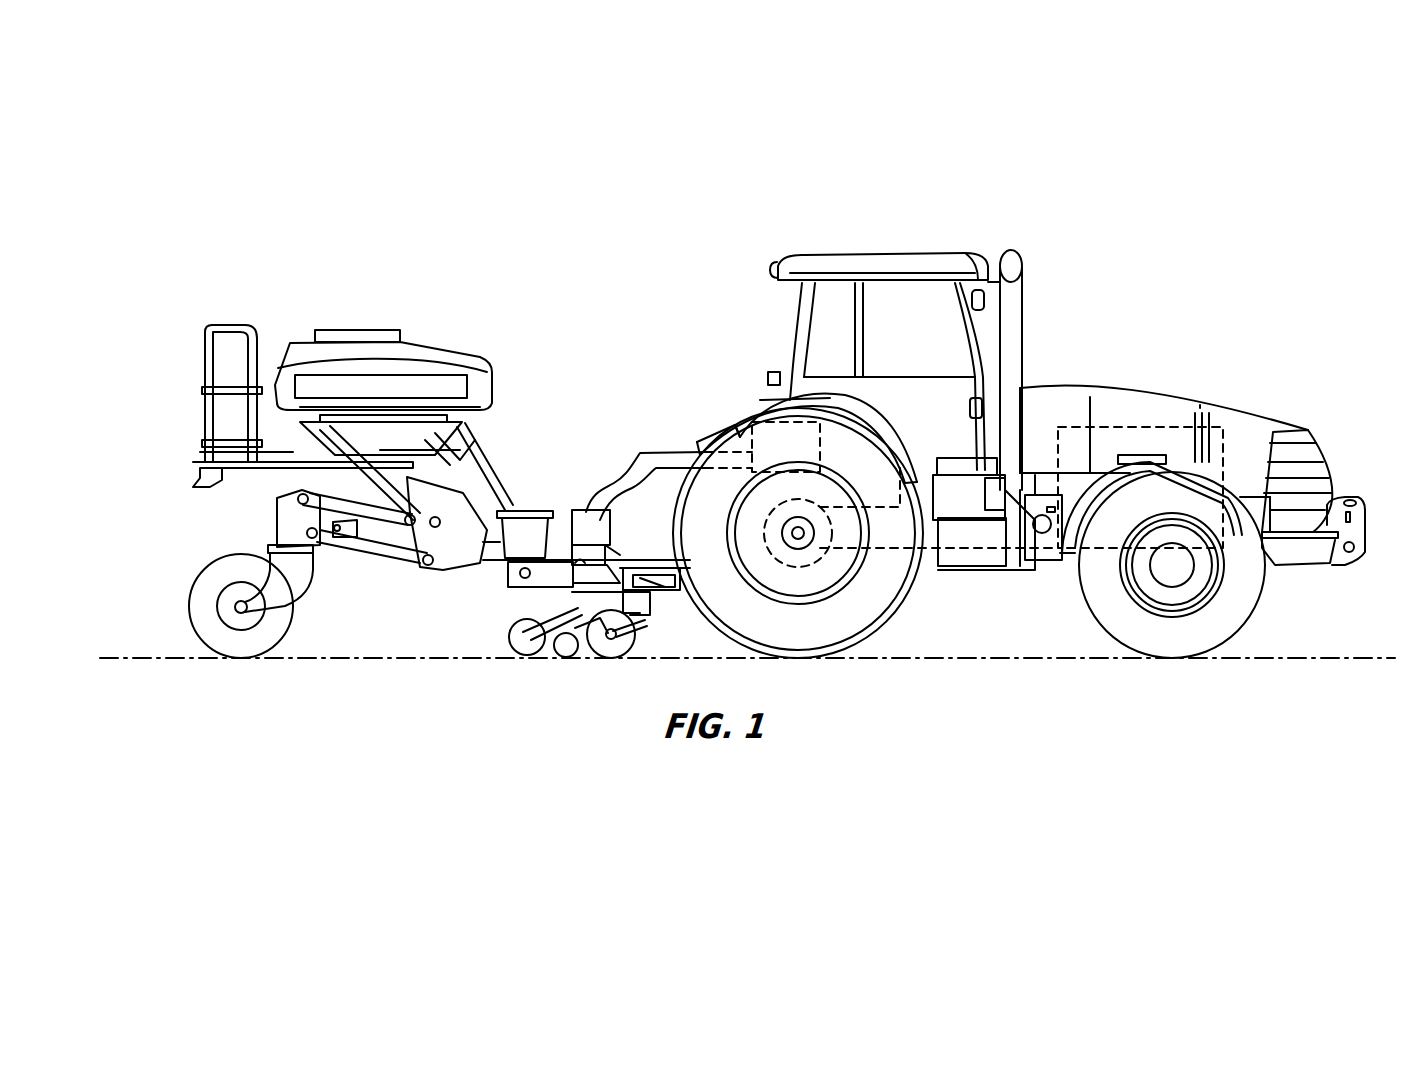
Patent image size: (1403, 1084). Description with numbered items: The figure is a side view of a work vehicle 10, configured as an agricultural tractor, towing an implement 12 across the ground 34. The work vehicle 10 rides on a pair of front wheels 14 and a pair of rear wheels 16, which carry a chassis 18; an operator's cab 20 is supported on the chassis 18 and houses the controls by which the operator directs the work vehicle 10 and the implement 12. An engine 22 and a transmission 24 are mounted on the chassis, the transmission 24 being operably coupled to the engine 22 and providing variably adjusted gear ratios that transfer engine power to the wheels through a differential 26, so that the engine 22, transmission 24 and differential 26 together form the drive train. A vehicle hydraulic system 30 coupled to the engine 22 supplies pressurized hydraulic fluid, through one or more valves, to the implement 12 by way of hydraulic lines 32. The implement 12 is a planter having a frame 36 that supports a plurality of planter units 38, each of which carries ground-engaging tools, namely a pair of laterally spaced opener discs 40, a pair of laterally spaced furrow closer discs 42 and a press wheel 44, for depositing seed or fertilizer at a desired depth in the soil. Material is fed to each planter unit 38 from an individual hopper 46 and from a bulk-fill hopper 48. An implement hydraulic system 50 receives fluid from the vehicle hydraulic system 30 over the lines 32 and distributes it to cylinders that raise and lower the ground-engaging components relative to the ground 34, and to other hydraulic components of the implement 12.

The work vehicle 10 is at (1070, 300).
The implement 12 is at (568, 326).
The front wheels 14 is at (1238, 598).
The rear wheels 16 is at (830, 630).
The chassis 18 is at (1045, 578).
The operator's cab 20 is at (918, 262).
The engine 22 is at (1155, 427).
The transmission 24 is at (902, 432).
The differential 26 is at (822, 552).
The vehicle hydraulic system 30 is at (758, 396).
The hydraulic lines 32 is at (672, 468).
The ground 34 is at (358, 656).
The frame 36 is at (655, 558).
The planter units 38 is at (542, 603).
The opener discs 40 is at (610, 650).
The furrow closer discs 42 is at (565, 655).
The press wheel 44 is at (528, 650).
The individual hopper 46 is at (524, 530).
The bulk-fill hopper 48 is at (425, 352).
The implement hydraulic system 50 is at (585, 522).